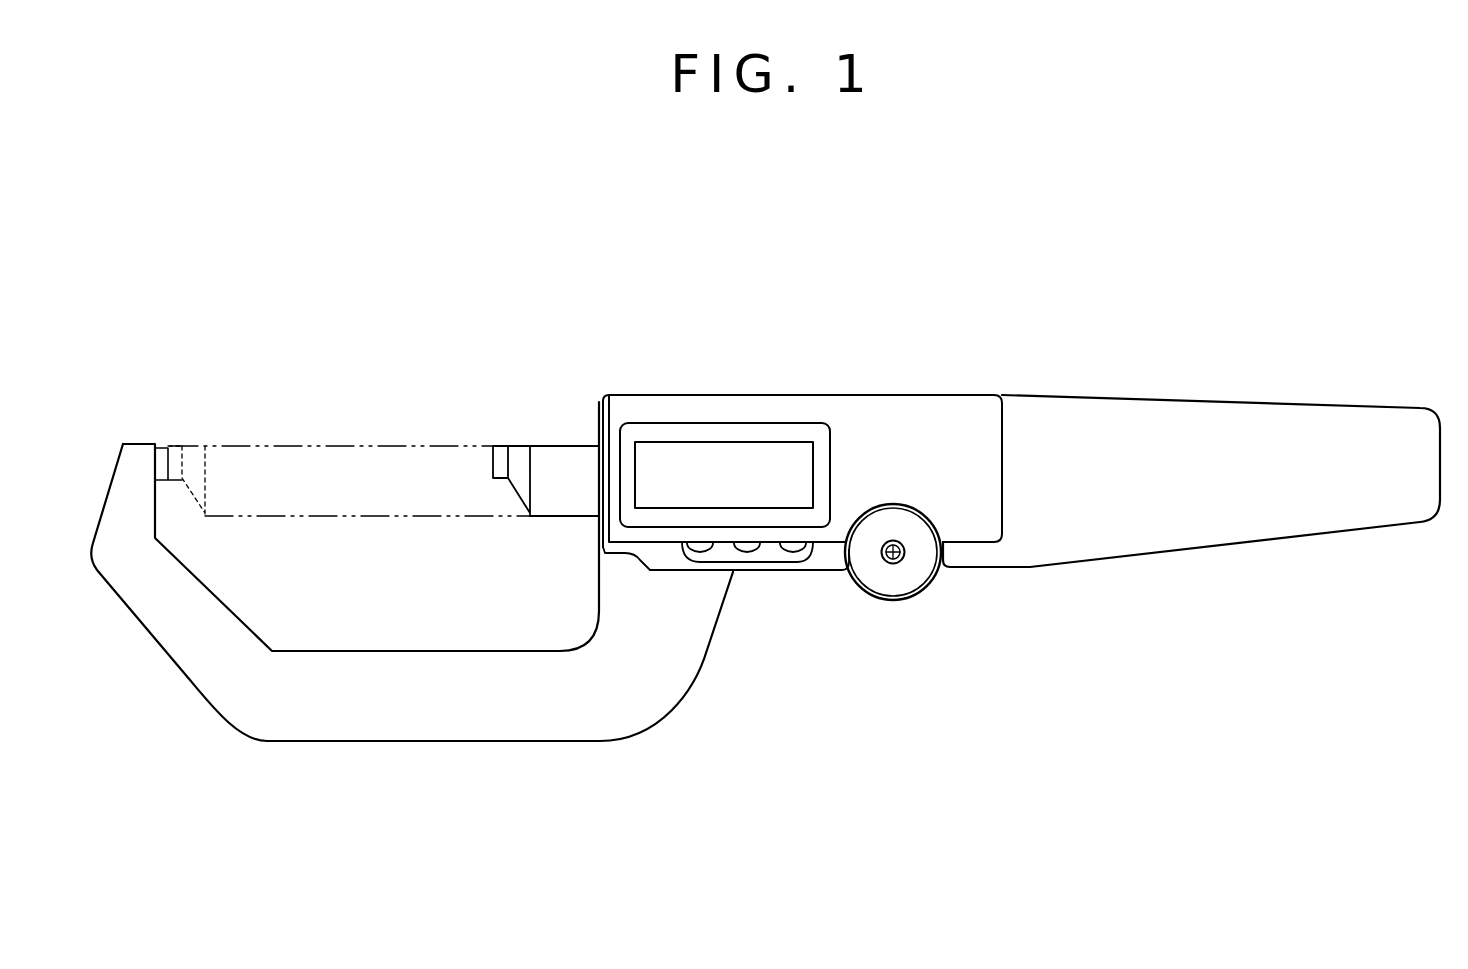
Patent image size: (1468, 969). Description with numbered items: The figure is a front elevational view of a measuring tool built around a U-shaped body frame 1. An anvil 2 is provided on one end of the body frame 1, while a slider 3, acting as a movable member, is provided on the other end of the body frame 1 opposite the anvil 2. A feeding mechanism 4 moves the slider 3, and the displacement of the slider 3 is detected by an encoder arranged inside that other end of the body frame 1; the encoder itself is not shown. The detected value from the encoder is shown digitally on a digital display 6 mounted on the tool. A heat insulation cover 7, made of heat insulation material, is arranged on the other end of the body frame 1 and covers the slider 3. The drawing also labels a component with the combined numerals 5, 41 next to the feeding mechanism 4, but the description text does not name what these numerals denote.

The body frame 1 is at (463, 741).
The anvil 2 is at (160, 447).
The slider 3 is at (558, 443).
The feeding mechanism 4 is at (905, 618).
The thimble 5 is at (968, 571).
The rotary drive member 41 is at (928, 585).
The digital display 6 is at (670, 447).
The heat insulation cover 7 is at (1212, 400).